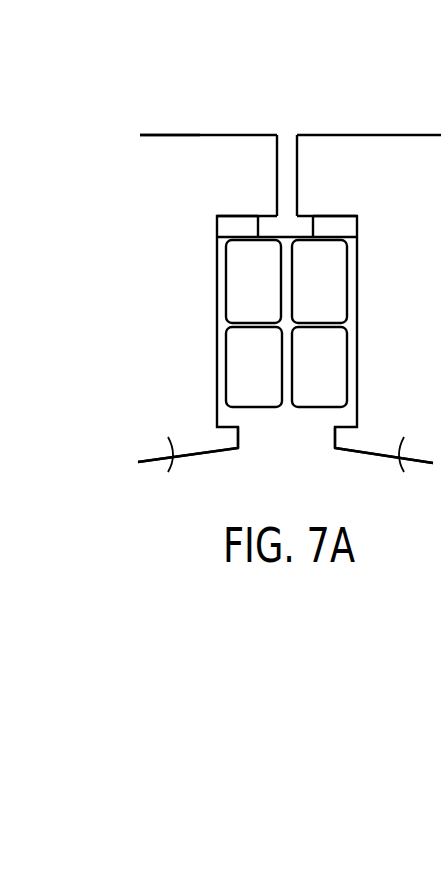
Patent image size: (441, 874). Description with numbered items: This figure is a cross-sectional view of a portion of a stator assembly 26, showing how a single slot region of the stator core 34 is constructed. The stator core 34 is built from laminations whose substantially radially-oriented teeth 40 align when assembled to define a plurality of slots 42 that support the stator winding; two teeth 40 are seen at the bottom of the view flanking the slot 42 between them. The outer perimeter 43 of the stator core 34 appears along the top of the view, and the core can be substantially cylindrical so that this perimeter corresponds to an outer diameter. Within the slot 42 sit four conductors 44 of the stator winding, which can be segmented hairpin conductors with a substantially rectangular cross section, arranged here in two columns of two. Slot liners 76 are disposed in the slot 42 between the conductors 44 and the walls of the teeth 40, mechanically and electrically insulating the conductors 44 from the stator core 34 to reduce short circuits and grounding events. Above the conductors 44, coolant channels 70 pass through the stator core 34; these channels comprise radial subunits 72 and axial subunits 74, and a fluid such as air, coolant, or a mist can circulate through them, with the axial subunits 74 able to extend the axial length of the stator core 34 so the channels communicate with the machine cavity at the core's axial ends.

The stator assembly 26 is at (272, 72).
The stator core 34 is at (185, 134).
The outer perimeter 43 is at (160, 133).
The radial subunit 72 is at (290, 158).
The coolant channels 70 is at (300, 227).
The axial subunit 74 is at (270, 227).
The slot liner 76 is at (237, 225).
The conductors 44 is at (240, 283).
The teeth 40 is at (285, 470).
The slots 42 is at (284, 437).